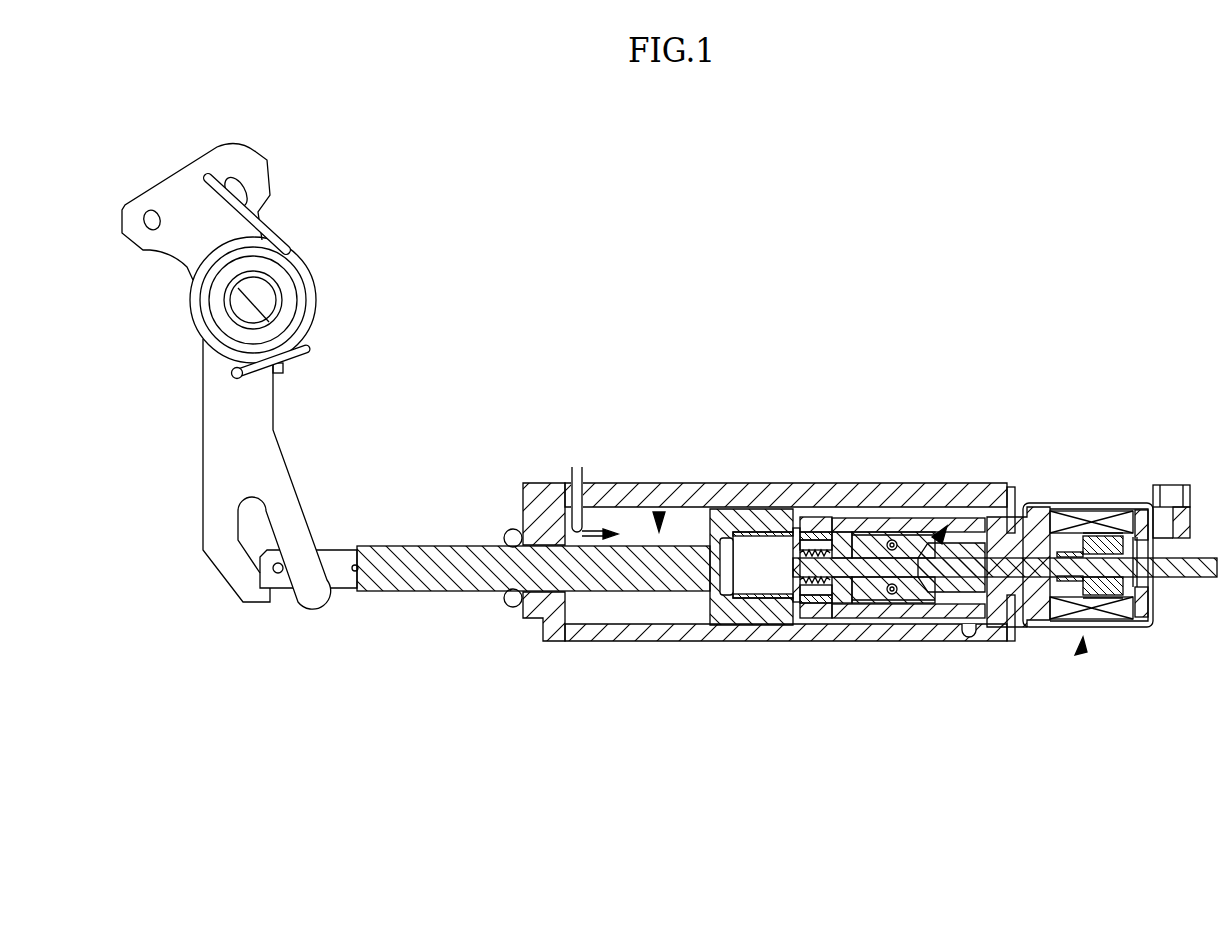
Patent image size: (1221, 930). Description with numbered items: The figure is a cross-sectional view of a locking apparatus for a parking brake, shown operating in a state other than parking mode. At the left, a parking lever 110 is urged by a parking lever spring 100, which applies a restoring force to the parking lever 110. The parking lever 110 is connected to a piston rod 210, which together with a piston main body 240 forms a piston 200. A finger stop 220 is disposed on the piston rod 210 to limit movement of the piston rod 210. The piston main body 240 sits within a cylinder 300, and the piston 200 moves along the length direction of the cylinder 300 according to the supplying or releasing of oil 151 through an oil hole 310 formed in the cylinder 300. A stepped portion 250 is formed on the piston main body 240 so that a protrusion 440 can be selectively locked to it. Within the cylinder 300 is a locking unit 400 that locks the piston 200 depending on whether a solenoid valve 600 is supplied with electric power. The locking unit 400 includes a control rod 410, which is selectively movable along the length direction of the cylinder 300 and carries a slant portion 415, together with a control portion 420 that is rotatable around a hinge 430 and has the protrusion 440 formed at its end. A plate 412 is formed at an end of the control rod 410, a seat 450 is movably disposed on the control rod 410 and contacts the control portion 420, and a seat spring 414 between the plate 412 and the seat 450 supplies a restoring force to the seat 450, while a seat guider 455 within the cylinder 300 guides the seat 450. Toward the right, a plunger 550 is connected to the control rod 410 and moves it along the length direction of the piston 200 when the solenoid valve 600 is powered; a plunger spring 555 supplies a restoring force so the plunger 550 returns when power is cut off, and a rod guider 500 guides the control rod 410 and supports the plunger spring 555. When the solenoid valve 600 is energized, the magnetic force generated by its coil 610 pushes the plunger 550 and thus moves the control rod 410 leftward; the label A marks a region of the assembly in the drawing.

The parking lever spring 100 is at (290, 302).
The parking lever 110 is at (253, 423).
The oil 151 is at (578, 467).
The piston 200 is at (659, 512).
The piston rod 210 is at (408, 553).
The finger stop 220 is at (505, 535).
The piston main body 240 is at (898, 540).
The stepped portion 250 is at (878, 532).
The cylinder 300 is at (727, 483).
The oil hole 310 is at (563, 482).
The locking unit 400 is at (948, 527).
The control rod 410 is at (927, 618).
The plate 412 is at (795, 528).
The seat spring 414 is at (810, 517).
The slant portion 415 is at (945, 543).
The control portion 420 is at (862, 618).
The hinge 430 is at (893, 618).
The protrusion 440 is at (845, 532).
The seat 450 is at (823, 618).
The seat guider 455 is at (800, 612).
The rod guider 500 is at (1035, 530).
The plunger 550 is at (1105, 556).
The plunger spring 555 is at (1070, 552).
The solenoid valve 600 is at (1081, 652).
The coil 610 is at (1104, 628).
The flow direction A is at (940, 530).